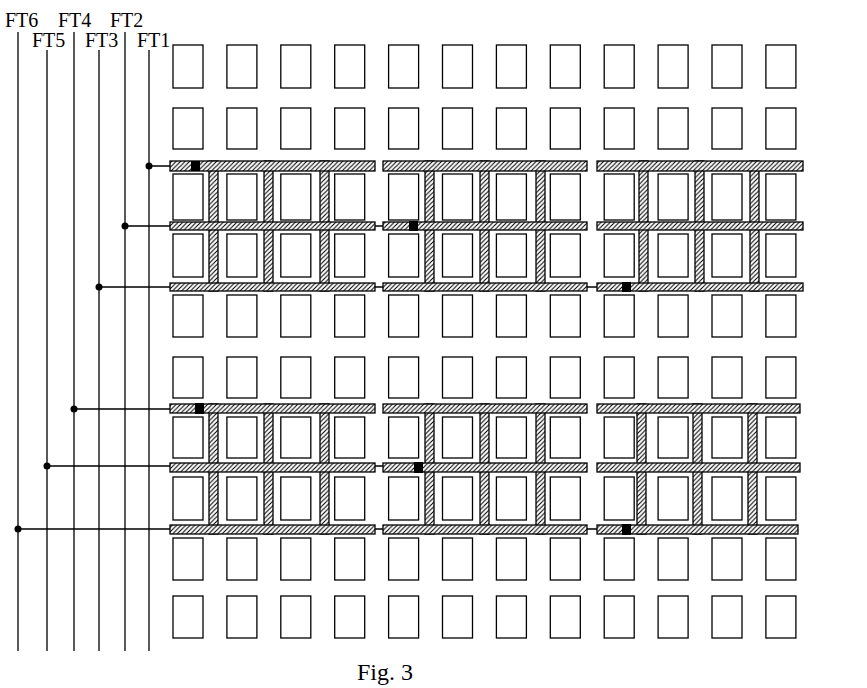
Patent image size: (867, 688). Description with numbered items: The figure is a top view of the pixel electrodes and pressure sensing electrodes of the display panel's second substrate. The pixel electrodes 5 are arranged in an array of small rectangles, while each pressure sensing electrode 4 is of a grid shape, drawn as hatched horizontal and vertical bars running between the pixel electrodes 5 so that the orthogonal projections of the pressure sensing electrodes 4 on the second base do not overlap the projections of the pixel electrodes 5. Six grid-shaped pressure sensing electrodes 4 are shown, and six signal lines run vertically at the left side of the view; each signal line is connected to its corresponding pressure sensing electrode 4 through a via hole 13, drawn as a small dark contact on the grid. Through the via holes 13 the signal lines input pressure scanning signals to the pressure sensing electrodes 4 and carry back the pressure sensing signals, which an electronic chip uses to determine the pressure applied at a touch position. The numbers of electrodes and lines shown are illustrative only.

The pressure sensing electrode 4 is at (803, 164).
The pixel electrode 5 is at (787, 200).
The via hole 13 is at (197, 156).